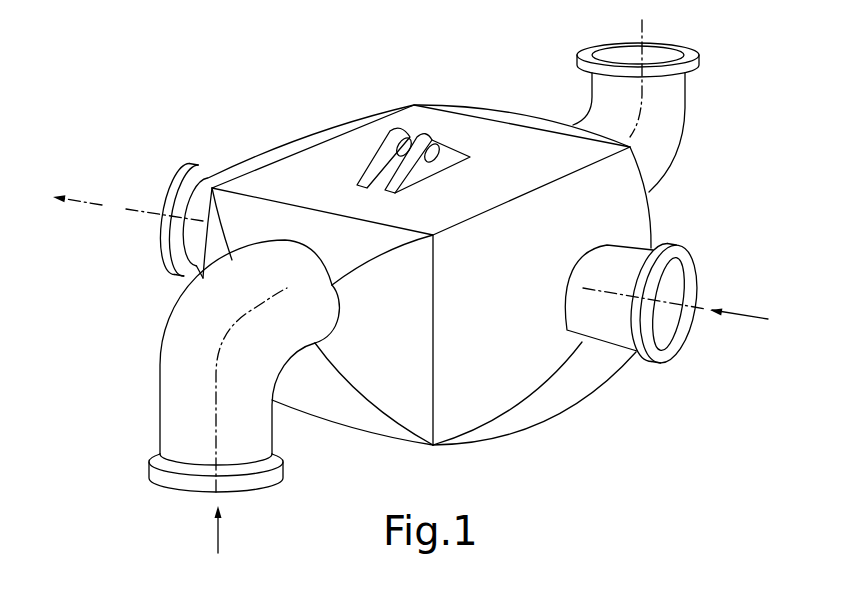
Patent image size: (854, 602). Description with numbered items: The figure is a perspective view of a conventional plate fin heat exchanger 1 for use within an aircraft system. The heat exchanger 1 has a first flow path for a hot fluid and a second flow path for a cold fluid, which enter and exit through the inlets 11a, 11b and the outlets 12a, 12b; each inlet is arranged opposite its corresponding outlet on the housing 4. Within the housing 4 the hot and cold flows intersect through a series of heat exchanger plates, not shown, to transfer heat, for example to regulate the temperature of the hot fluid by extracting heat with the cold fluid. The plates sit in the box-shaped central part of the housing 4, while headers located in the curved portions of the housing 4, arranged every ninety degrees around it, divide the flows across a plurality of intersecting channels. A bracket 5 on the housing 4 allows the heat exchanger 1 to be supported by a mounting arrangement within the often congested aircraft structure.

The plate fin heat exchanger 1 is at (421, 289).
The housing 4 is at (458, 446).
The bracket 5 is at (393, 134).
The inlet 11a is at (177, 489).
The inlet 11b is at (671, 50).
The outlet 12a is at (678, 338).
The outlet 12b is at (170, 188).